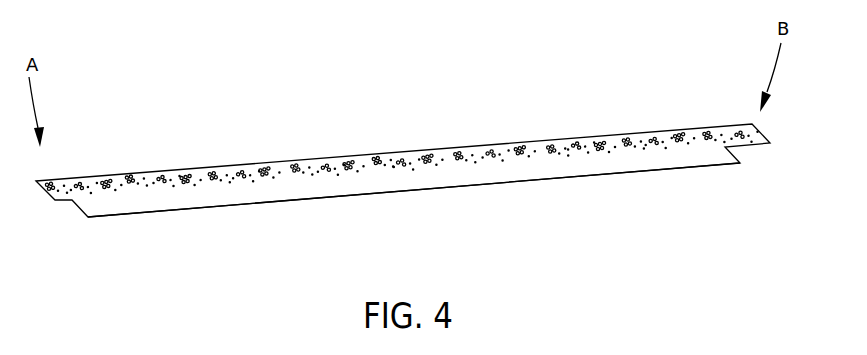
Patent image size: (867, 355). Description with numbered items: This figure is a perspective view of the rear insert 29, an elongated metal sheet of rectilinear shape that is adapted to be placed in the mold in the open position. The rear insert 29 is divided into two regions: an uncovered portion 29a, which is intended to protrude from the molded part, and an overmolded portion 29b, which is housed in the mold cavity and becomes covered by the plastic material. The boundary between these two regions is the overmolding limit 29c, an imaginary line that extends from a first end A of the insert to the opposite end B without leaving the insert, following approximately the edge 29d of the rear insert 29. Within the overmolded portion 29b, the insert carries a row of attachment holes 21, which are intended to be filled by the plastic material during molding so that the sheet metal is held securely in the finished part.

The attachment holes 21 is at (137, 177).
The rear insert 29 is at (534, 234).
The uncovered portion 29a is at (374, 183).
The overmolded portion 29b is at (452, 150).
The overmolding limit 29c is at (530, 157).
The edge 29d is at (263, 203).